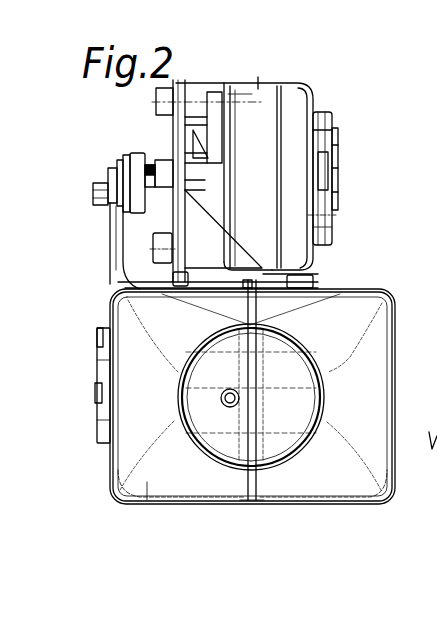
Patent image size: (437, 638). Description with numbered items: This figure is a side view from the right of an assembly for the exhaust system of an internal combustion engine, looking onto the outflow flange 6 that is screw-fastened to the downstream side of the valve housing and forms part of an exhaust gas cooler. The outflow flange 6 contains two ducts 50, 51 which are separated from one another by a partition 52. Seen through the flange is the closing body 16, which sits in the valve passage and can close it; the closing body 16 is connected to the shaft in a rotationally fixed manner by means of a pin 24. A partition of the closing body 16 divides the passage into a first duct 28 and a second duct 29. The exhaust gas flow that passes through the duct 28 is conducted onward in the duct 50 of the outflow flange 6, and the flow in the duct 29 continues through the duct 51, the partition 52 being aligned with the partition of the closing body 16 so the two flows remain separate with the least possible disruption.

The outflow flange 6 is at (106, 481).
The closing body 16 is at (176, 372).
The pin 24 is at (225, 406).
The first duct 28 is at (295, 365).
The second duct 29 is at (215, 368).
The duct 50 is at (345, 488).
The duct 51 is at (144, 496).
The partition 52 is at (243, 484).